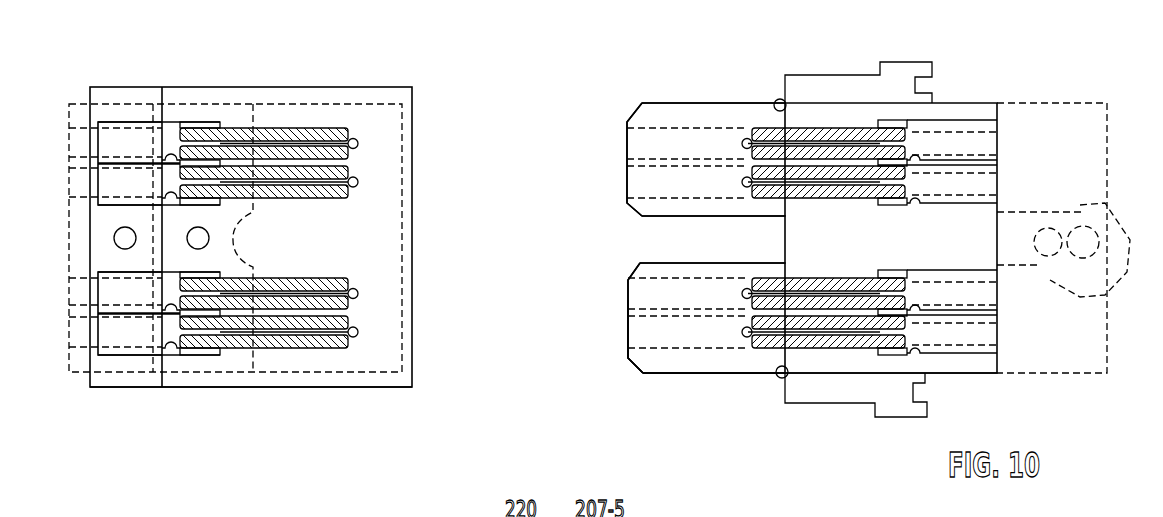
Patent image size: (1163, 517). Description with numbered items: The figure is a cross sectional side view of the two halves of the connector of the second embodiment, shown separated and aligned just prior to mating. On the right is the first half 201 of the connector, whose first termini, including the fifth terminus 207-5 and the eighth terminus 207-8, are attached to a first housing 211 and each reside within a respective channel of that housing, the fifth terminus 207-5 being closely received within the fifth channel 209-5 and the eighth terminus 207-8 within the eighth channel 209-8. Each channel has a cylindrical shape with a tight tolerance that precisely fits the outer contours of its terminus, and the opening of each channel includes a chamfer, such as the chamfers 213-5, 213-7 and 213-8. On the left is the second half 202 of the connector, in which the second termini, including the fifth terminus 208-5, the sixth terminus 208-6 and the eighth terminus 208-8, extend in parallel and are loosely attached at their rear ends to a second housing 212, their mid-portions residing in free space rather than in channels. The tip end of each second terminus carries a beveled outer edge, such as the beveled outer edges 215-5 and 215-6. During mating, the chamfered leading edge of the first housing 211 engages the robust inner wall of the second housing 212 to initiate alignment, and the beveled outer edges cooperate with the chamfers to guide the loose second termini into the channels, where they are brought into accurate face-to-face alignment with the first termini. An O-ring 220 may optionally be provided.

The first half of the connector 201 is at (978, 50).
The second half of the connector 202 is at (184, 52).
The fifth terminus 207-5 is at (818, 137).
The eighth terminus 207-8 is at (812, 346).
The fifth terminus 208-5 is at (295, 137).
The sixth terminus 208-6 is at (295, 199).
The eighth terminus 208-8 is at (300, 348).
The fifth channel 209-5 is at (693, 128).
The eighth channel 209-8 is at (688, 349).
The first housing 211 is at (730, 364).
The second housing 212 is at (197, 388).
The chamfer 213-5 is at (627, 140).
The chamfer 213-7 is at (628, 283).
The chamfer 213-8 is at (627, 343).
The beveled outer edge 215-5 is at (345, 125).
The beveled outer edge 215-6 is at (348, 196).
The O-ring 220 is at (775, 100).